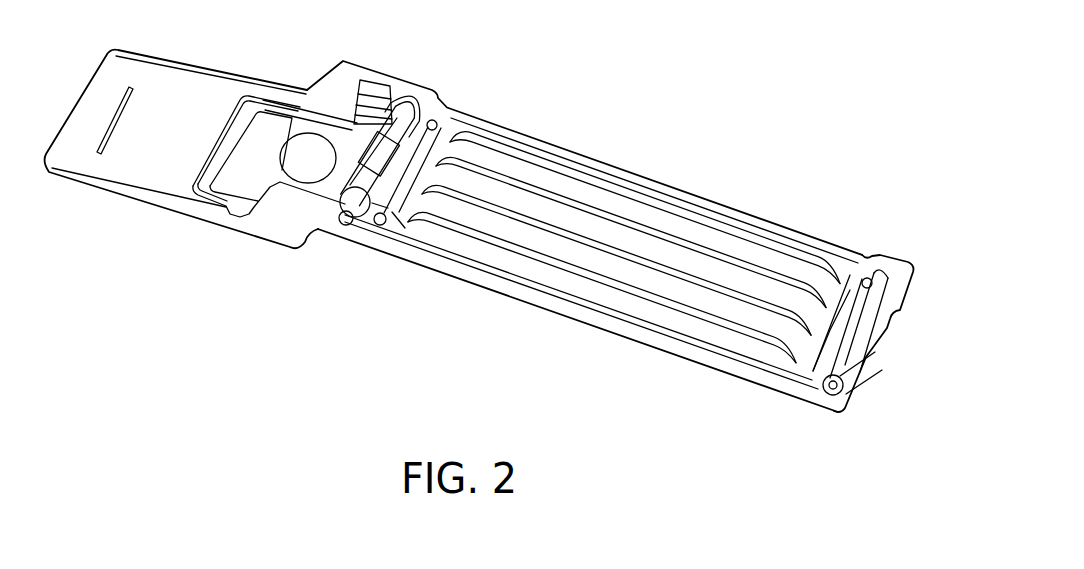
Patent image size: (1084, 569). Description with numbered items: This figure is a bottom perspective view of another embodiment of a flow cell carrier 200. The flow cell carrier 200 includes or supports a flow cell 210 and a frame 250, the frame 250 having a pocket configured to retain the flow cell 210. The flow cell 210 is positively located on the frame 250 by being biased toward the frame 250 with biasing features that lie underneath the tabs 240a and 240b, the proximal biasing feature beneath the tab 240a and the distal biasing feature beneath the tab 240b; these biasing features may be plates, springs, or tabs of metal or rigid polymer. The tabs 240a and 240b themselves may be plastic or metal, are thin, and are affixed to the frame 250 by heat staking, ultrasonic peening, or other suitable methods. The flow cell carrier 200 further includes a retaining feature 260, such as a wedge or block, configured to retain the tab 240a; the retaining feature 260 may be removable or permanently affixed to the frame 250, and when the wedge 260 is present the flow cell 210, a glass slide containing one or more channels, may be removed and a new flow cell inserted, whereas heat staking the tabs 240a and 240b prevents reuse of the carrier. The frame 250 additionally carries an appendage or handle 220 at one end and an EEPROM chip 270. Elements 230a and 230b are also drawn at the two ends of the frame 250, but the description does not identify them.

The flow cell carrier 200 is at (639, 39).
The flow cell 210 is at (695, 235).
The handle 220 is at (123, 83).
The first pivot boss 230a is at (347, 226).
The second pivot boss 230b is at (870, 327).
The tab 240a is at (423, 147).
The tab 240b is at (838, 338).
The frame 250 is at (423, 88).
The retaining feature 260 is at (386, 212).
The EEPROM chip 270 is at (371, 78).